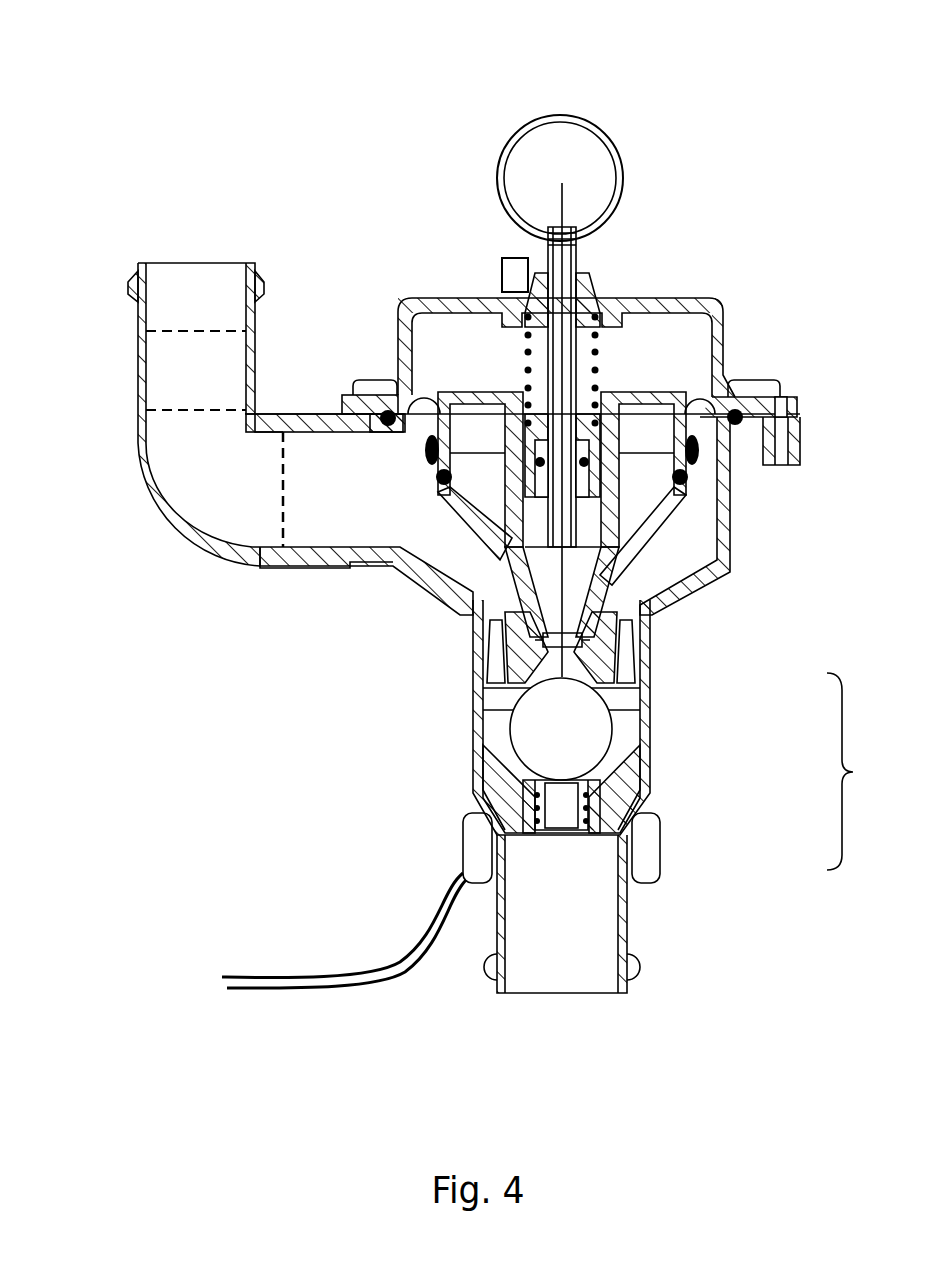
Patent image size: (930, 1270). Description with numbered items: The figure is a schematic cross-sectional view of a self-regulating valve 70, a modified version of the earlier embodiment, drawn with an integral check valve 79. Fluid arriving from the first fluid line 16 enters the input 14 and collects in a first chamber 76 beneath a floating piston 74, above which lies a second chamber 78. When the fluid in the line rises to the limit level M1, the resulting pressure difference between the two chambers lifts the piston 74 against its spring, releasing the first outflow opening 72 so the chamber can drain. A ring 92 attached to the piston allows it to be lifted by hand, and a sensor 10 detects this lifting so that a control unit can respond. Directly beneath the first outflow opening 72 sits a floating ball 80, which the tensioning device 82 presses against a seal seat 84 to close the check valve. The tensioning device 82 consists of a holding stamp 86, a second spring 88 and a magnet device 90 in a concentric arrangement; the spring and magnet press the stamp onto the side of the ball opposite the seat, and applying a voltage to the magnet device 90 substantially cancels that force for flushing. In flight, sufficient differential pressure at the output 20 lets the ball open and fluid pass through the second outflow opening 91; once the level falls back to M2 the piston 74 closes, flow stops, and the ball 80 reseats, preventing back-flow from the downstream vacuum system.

The self-regulating valve 70 is at (712, 108).
The sensor 10 is at (513, 267).
The ring 92 is at (627, 190).
The first fluid line 16 is at (215, 278).
The second chamber 78 is at (437, 318).
The first chamber 76 is at (393, 470).
The input 14 is at (283, 488).
The floating piston 74 is at (713, 513).
The first outflow opening 72 is at (617, 590).
The floating ball 80 is at (520, 722).
The seal seat 84 is at (607, 686).
The second outflow opening 91 is at (615, 755).
The tensioning device 82 is at (625, 803).
The check valve 79 is at (857, 771).
The second spring 88 is at (485, 815).
The holding stamp 86 is at (567, 813).
The magnet device 90 is at (645, 840).
The output 20 is at (590, 968).
The limit level M1 is at (168, 332).
The level M2 is at (177, 410).